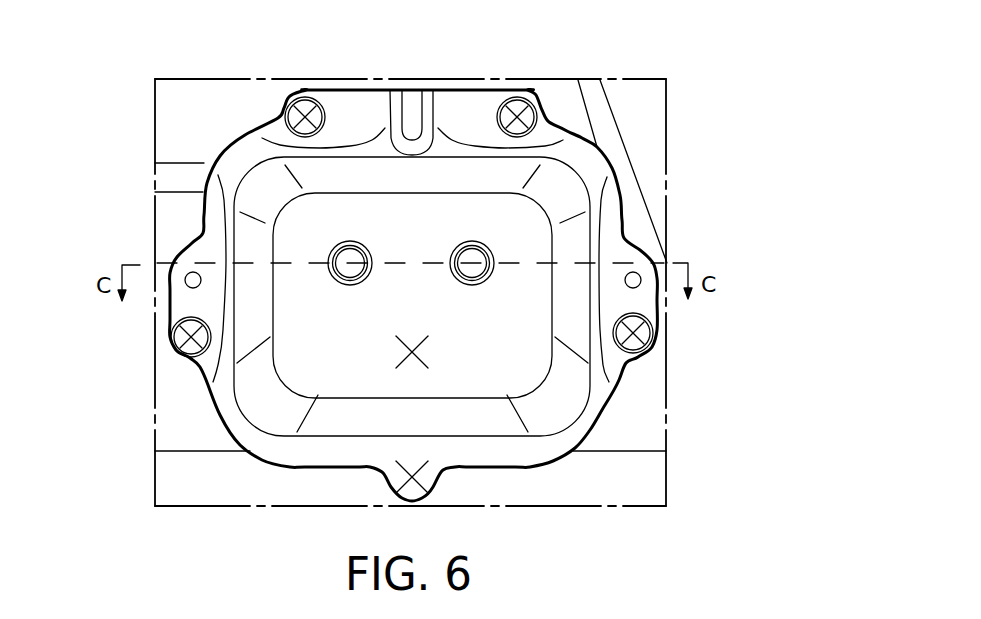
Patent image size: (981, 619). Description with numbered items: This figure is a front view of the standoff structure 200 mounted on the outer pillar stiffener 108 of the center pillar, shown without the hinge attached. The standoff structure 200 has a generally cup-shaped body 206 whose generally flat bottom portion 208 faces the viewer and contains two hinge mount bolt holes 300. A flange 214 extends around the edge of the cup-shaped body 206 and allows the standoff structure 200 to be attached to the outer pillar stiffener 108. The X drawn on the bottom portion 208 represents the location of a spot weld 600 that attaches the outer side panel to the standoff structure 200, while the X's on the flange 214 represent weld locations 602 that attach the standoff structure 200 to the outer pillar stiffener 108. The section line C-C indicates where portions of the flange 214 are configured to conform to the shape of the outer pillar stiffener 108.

The outer pillar stiffener 108 is at (577, 430).
The standoff structure 200 is at (579, 64).
The cup-shaped body 206 is at (630, 220).
The bottom portion 208 is at (408, 248).
The flange 214 is at (203, 233).
The hinge mount bolt holes 300 is at (350, 258).
The spot weld 600 is at (430, 352).
The weld locations 602 is at (303, 97).